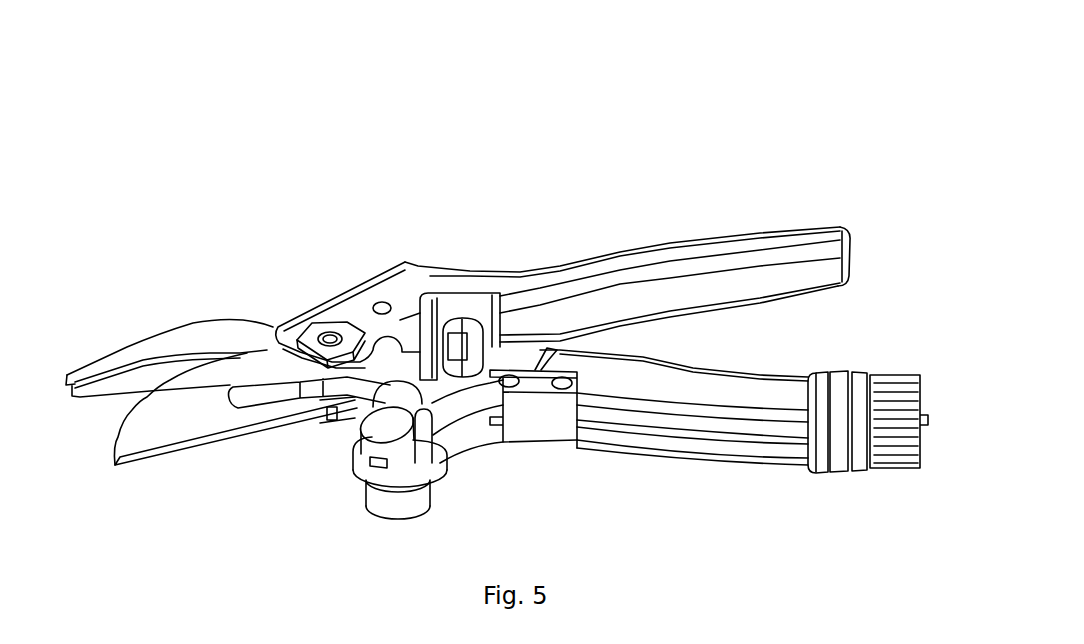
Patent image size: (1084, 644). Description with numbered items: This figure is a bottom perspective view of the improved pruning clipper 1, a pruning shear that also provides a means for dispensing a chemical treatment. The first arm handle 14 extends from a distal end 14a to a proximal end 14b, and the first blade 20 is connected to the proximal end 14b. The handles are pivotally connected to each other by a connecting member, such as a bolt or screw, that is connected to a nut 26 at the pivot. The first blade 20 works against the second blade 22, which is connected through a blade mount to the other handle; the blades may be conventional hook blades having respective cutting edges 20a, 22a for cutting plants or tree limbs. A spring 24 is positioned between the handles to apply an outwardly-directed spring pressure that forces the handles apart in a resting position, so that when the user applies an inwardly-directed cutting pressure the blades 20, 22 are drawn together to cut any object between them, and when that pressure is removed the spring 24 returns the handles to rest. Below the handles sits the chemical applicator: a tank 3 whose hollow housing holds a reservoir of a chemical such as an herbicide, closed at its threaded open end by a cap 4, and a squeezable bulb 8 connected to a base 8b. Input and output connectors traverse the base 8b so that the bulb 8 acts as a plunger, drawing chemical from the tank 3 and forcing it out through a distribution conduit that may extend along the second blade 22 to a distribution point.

The pruning clipper 1 is at (513, 96).
The tank 3 is at (685, 450).
The cap 4 is at (877, 470).
The bulb 8 is at (390, 517).
The base 8b is at (433, 473).
The first arm handle 14 is at (612, 222).
The distal end 14a is at (852, 250).
The proximal end 14b is at (233, 407).
The first blade 20 is at (188, 427).
The cutting edge 20a is at (142, 398).
The second blade 22 is at (207, 320).
The cutting edge 22a is at (143, 360).
The spring 24 is at (472, 322).
The nut 26 is at (317, 327).